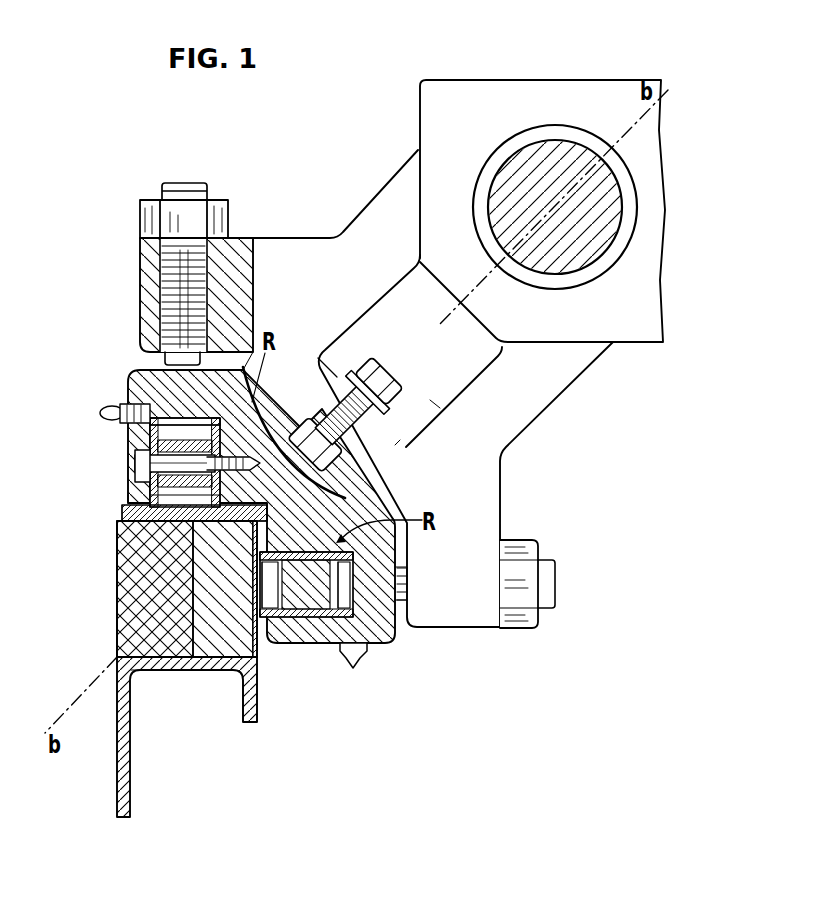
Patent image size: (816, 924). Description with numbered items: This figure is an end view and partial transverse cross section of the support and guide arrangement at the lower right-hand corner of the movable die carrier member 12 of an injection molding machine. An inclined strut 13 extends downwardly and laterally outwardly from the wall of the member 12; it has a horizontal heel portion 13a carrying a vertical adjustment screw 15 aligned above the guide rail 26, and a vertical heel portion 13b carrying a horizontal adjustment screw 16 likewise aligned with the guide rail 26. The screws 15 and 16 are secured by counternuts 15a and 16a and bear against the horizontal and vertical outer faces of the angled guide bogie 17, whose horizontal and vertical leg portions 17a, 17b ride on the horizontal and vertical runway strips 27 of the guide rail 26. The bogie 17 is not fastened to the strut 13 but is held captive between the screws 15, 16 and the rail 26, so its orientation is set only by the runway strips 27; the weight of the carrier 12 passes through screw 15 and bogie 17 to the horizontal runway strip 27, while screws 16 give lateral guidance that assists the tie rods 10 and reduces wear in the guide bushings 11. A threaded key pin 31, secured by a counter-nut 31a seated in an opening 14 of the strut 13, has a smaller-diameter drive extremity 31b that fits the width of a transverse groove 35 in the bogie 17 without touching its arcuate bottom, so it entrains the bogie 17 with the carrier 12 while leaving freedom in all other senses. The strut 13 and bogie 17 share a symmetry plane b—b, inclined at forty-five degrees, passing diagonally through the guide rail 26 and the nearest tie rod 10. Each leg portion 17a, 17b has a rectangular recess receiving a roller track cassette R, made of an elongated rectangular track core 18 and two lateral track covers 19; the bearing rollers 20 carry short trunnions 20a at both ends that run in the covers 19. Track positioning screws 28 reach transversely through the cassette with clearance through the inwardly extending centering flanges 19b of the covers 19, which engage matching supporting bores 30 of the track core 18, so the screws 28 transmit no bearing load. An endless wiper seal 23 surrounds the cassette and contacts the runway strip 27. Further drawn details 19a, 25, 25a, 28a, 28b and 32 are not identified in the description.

The tie rod 10 is at (568, 172).
The guide bushing 11 is at (524, 135).
The movable die carrier member 12 is at (458, 100).
The inclined strut 13 is at (358, 203).
The horizontal heel portion 13a is at (150, 277).
The vertical heel portion 13b is at (470, 617).
The opening 14 is at (490, 353).
The vertical adjustment screw 15 is at (140, 232).
The counternut 15a is at (230, 207).
The horizontal adjustment screw 16 is at (405, 600).
The counternut 16a is at (530, 540).
The guide bogie 17 is at (128, 378).
The horizontal leg portion 17a is at (135, 460).
The vertical leg portion 17b is at (312, 630).
The track core 18 is at (118, 574).
The lateral track cover 19 is at (135, 470).
The pin head 19a is at (227, 421).
The centering flange 19b is at (243, 365).
The bearing roller 20 is at (190, 583).
The trunnion 20a is at (135, 432).
The wiper seal 23 is at (150, 545).
The channel rail 25 is at (125, 768).
The rail flange 25a is at (253, 687).
The guide rail 26 is at (140, 634).
The runway strip 27 is at (126, 521).
The track positioning screw 28 is at (135, 511).
The recess edge 28a is at (275, 400).
The plate edge 28b is at (128, 502).
The supporting bore 30 is at (190, 670).
The threaded key pin 31 is at (378, 386).
The counter-nut 31a is at (440, 408).
The drive extremity 31b is at (400, 440).
The set screw 32 is at (107, 412).
The transverse groove 35 is at (325, 352).